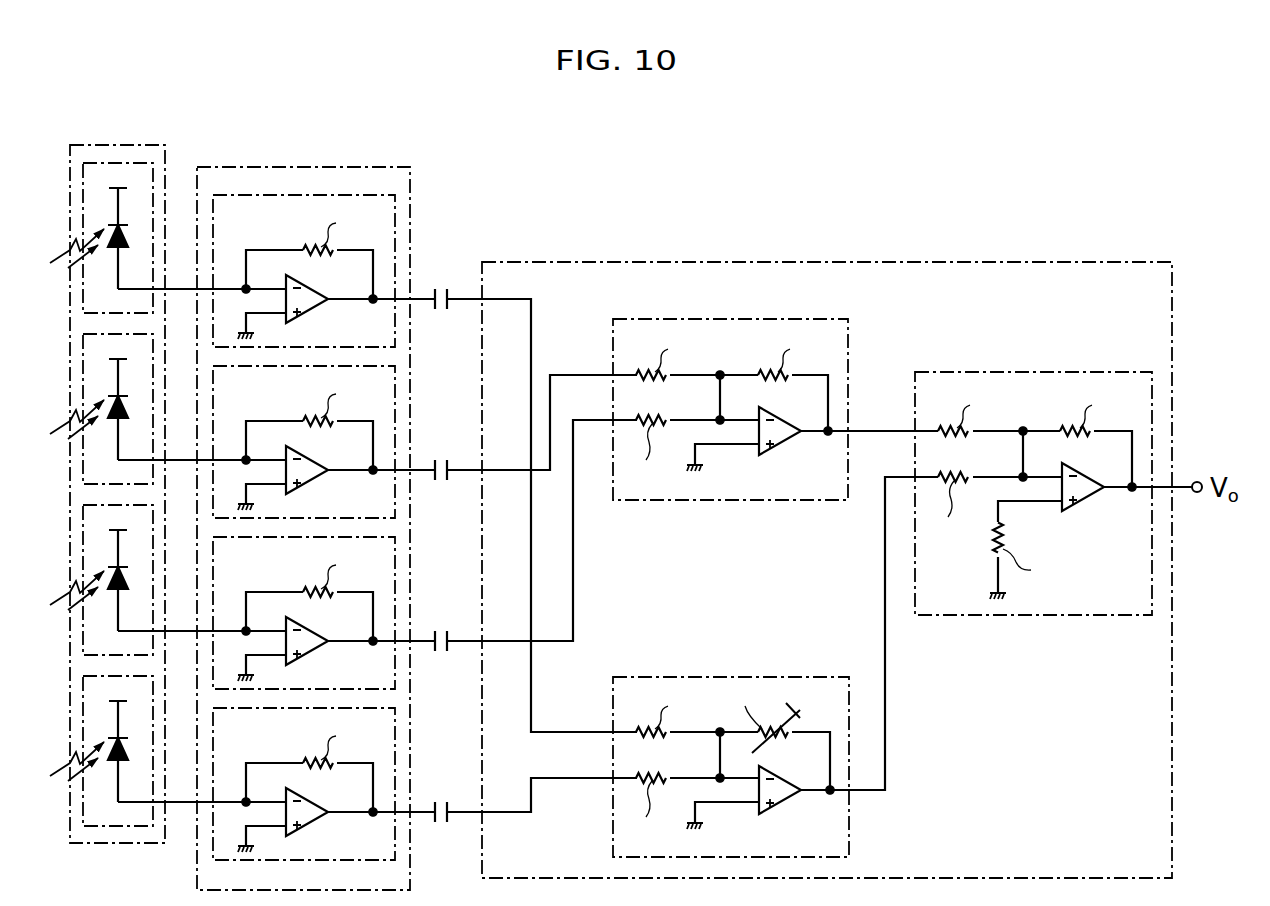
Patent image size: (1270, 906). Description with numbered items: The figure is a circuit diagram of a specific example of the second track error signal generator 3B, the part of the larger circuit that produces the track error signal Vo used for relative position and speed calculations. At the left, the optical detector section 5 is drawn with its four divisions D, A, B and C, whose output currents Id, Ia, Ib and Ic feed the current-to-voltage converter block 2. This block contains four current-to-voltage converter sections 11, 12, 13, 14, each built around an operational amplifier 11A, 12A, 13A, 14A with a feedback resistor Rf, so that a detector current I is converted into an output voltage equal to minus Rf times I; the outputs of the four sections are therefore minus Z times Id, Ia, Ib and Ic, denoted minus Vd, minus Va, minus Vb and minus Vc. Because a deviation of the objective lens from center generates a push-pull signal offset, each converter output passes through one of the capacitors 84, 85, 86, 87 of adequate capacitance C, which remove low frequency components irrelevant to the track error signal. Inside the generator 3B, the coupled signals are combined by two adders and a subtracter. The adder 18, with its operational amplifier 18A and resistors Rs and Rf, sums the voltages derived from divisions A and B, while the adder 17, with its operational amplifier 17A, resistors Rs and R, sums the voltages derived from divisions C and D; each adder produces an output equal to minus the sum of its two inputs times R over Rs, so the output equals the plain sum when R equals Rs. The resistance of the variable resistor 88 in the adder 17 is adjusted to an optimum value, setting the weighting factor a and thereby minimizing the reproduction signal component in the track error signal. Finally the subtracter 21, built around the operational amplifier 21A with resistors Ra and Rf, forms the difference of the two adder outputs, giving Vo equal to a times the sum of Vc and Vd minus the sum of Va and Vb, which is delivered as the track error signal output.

The photodetector unit with photodiodes A, B, C, D 5 is at (100, 145).
The current-to-voltage conversion unit 2 is at (290, 167).
The current-to-voltage converter section 11 is at (397, 228).
The current-to-voltage converter section 12 is at (336, 442).
The current-to-voltage converter section 13 is at (336, 613).
The current-to-voltage converter section 14 is at (336, 784).
The operational amplifier 11A is at (312, 311).
The operational amplifier of converter 12 12A is at (337, 479).
The operational amplifier of converter 13 13A is at (337, 650).
The operational amplifier of converter 14 14A is at (337, 821).
The capacitor 84 is at (441, 311).
The capacitor 85 is at (444, 486).
The capacitor 86 is at (444, 657).
The capacitor 87 is at (444, 828).
The second track error signal generator 3B is at (828, 262).
The adder circuit 18 is at (683, 319).
The operational amplifier of adder 18 18A is at (783, 451).
The adder 17 is at (683, 677).
The operational amplifier 17A is at (783, 810).
The variable resistor 88 is at (800, 712).
The subtracter 21 is at (1018, 372).
The operational amplifier 21A is at (1085, 506).